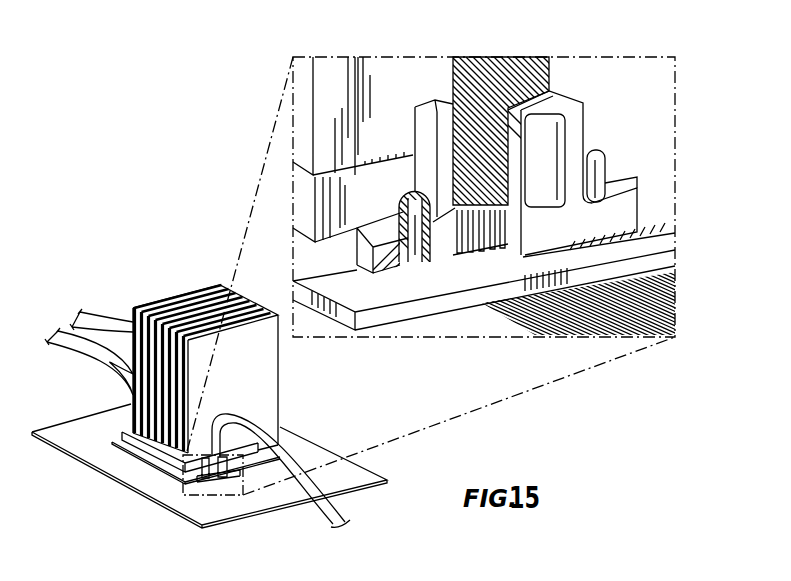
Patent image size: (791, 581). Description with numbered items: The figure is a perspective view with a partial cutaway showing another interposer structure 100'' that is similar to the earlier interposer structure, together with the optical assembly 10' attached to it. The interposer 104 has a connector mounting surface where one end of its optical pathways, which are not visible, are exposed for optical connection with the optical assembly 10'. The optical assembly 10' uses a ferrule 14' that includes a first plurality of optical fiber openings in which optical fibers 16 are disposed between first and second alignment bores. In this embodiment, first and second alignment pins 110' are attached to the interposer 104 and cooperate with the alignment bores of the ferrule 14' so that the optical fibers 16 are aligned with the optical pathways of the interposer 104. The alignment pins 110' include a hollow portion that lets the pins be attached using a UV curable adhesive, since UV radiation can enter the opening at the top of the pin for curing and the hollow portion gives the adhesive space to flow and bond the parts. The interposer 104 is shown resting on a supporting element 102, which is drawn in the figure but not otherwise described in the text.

The optical fibers 16 is at (547, 68).
The optical assembly 10' is at (580, 157).
The ferrule 14' is at (623, 217).
The interposer 104 is at (568, 258).
The base plate 102 is at (655, 315).
The alignment pins 110' is at (448, 275).
The interposer structure 100'' is at (209, 411).